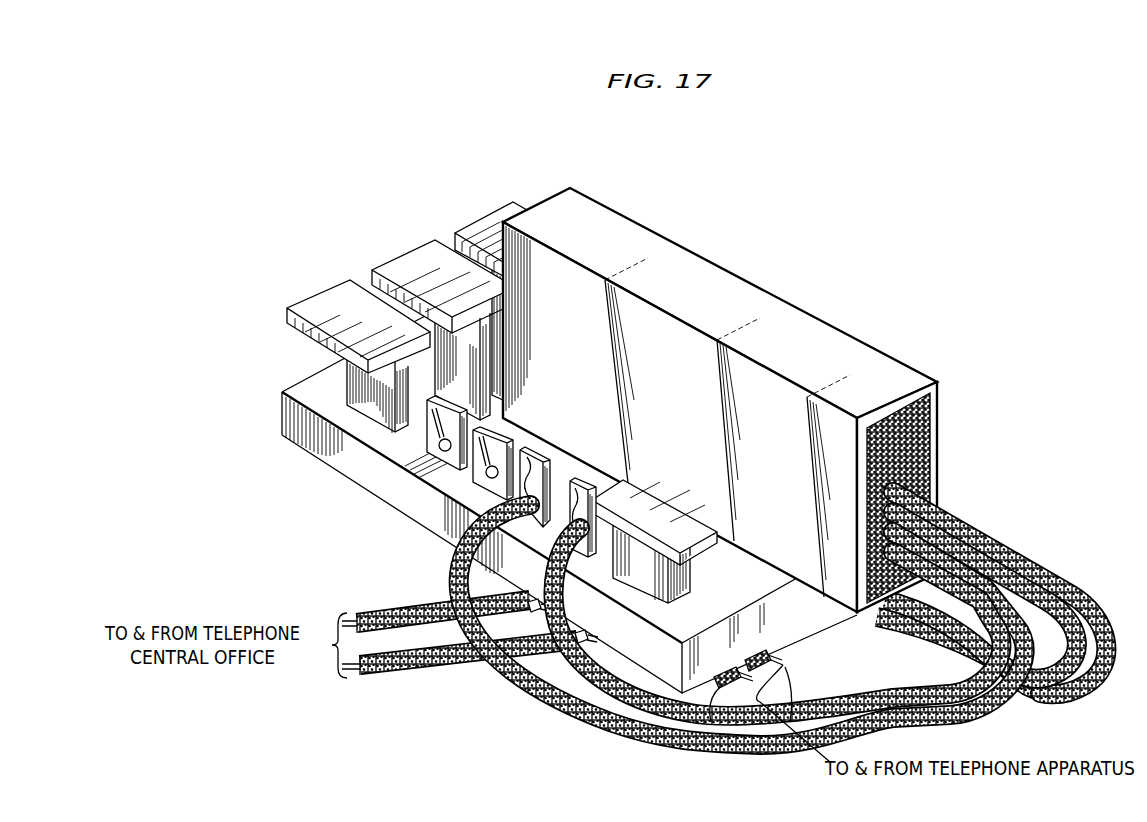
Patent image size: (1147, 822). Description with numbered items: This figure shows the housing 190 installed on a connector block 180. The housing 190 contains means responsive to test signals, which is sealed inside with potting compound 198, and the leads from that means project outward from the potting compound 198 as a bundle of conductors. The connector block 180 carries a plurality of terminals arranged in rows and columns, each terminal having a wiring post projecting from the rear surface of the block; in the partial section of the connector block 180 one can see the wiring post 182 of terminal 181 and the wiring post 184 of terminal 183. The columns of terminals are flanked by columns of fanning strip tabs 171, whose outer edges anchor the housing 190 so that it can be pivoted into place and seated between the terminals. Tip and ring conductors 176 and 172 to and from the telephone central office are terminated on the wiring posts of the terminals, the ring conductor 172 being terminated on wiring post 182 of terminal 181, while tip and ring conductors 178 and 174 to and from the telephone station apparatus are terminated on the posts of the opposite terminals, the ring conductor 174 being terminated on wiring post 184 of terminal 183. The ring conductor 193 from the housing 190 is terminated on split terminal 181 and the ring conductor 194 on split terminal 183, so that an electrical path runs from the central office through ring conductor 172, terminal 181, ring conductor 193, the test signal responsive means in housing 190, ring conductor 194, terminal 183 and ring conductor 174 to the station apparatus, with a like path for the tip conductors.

The fanning strip tabs 171 is at (336, 300).
The ring electrical conductor 172 is at (392, 620).
The ring electrical conductor 174 is at (717, 692).
The tip electrical conductor 176 is at (400, 670).
The tip electrical conductor 178 is at (660, 507).
The connector block 180 is at (365, 465).
The terminal 181 is at (530, 470).
The wiring post 182 is at (533, 614).
The terminal 183 is at (580, 480).
The wiring post 184 is at (583, 646).
The housing 190 is at (818, 330).
The ring electrical conductor 193 is at (970, 713).
The ring electrical conductor 194 is at (893, 690).
The potting compound 198 is at (918, 440).